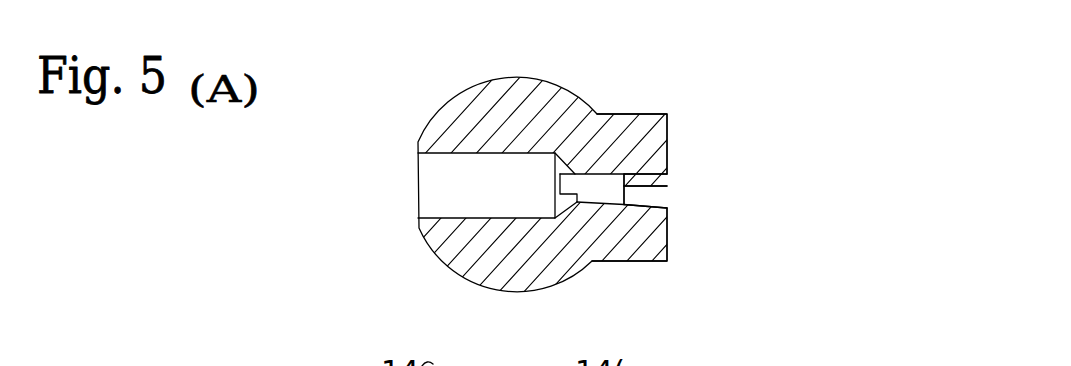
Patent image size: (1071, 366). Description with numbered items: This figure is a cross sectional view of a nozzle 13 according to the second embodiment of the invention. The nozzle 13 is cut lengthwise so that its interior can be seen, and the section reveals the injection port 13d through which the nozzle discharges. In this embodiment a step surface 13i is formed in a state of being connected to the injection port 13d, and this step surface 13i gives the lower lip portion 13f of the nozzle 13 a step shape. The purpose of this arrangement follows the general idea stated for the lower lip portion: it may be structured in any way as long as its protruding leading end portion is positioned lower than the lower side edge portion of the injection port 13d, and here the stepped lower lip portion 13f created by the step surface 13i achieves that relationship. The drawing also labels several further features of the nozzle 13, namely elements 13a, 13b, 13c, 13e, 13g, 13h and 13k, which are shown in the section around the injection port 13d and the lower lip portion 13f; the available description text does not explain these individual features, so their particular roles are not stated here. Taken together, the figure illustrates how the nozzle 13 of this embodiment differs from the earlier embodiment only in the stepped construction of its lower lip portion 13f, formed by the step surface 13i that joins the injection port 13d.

The nozzle 13 is at (692, 60).
The spherical head portion 13a is at (463, 122).
The bore 13b is at (441, 153).
The valve seat insert 13c is at (563, 199).
The injection port 13d is at (584, 188).
The upper neck wall 13e is at (638, 130).
The lower lip portion 13f is at (648, 245).
The step edge 13g is at (657, 178).
The outlet channel 13h is at (657, 203).
The channel upper wall 13k is at (667, 186).
The step surface 13i is at (580, 204).